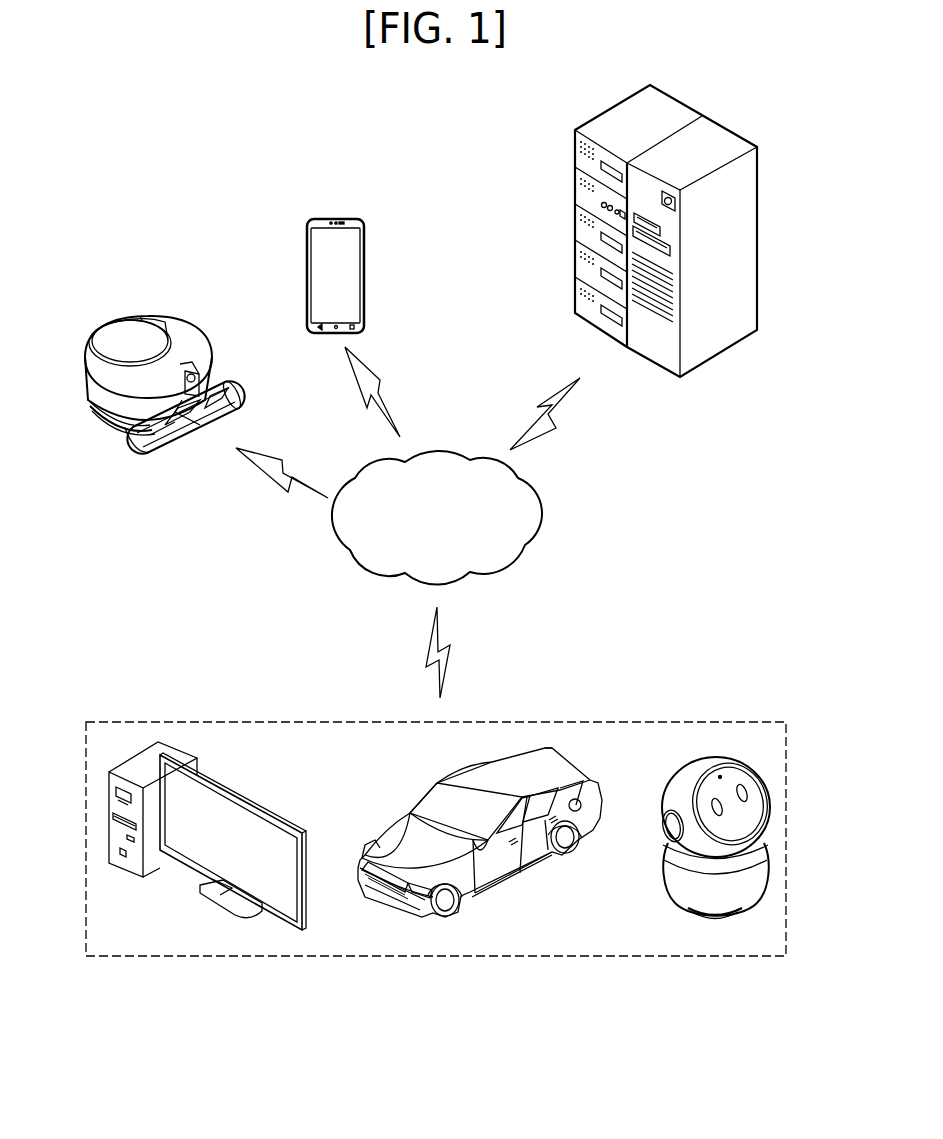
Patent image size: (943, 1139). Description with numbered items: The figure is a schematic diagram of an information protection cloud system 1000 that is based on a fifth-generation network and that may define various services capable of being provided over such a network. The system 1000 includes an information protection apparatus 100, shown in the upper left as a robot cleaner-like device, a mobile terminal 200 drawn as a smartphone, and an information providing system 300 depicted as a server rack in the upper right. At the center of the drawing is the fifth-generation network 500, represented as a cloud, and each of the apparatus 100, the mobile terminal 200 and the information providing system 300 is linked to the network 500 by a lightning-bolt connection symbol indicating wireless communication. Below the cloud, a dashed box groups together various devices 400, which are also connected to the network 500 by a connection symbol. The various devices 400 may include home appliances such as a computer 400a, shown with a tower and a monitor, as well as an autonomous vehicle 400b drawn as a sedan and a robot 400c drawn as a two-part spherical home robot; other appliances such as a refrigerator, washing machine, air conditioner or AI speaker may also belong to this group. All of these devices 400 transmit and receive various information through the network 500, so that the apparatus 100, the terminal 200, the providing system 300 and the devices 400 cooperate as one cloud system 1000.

The information protection apparatus 100 is at (167, 316).
The mobile terminal 200 is at (338, 219).
The information providing system 300 is at (733, 130).
The various devices 400 is at (672, 722).
The computer 400a is at (220, 908).
The autonomous vehicle 400b is at (446, 917).
The robot 400c is at (718, 915).
The 5G network 500 is at (437, 452).
The information protection cloud system 1000 is at (738, 1077).